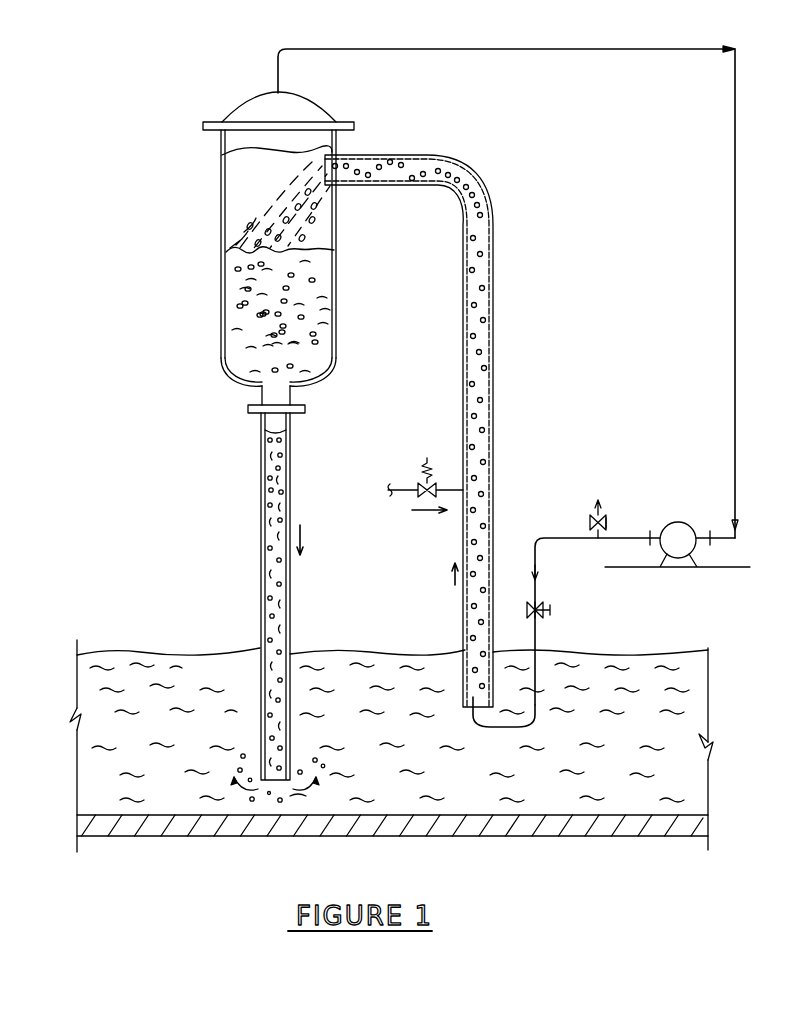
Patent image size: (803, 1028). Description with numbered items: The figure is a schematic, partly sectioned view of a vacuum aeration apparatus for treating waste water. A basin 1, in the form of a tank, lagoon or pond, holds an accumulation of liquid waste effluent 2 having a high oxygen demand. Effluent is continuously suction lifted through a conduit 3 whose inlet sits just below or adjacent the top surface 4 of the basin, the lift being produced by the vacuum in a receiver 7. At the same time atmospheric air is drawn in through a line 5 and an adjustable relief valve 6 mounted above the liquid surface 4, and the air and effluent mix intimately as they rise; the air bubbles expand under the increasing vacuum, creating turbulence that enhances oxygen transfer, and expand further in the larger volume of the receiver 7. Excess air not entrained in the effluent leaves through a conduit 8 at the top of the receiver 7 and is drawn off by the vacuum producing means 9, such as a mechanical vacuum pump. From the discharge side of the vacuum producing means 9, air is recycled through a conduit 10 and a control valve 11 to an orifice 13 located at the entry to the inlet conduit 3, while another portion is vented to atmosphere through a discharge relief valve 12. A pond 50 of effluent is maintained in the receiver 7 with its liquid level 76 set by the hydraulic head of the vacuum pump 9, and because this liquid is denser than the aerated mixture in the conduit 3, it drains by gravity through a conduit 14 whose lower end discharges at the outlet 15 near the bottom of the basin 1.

The basin 1 is at (77, 707).
The liquid waste effluent 2 is at (212, 675).
The conduit 3 is at (493, 292).
The top surface 4 is at (136, 652).
The line 5 is at (388, 492).
The adjustable relief valve 6 is at (424, 466).
The receiver 7 is at (222, 305).
The conduit 8 is at (367, 46).
The vacuum producing means 9 is at (686, 523).
The conduit 10 is at (540, 537).
The control valve 11 is at (550, 610).
The discharge relief valve 12 is at (603, 520).
The orifice 13 is at (470, 690).
The conduit 14 is at (260, 522).
The outlet 15 is at (285, 778).
The pond of liquid effluent 50 is at (281, 317).
The liquid level 76 is at (232, 250).